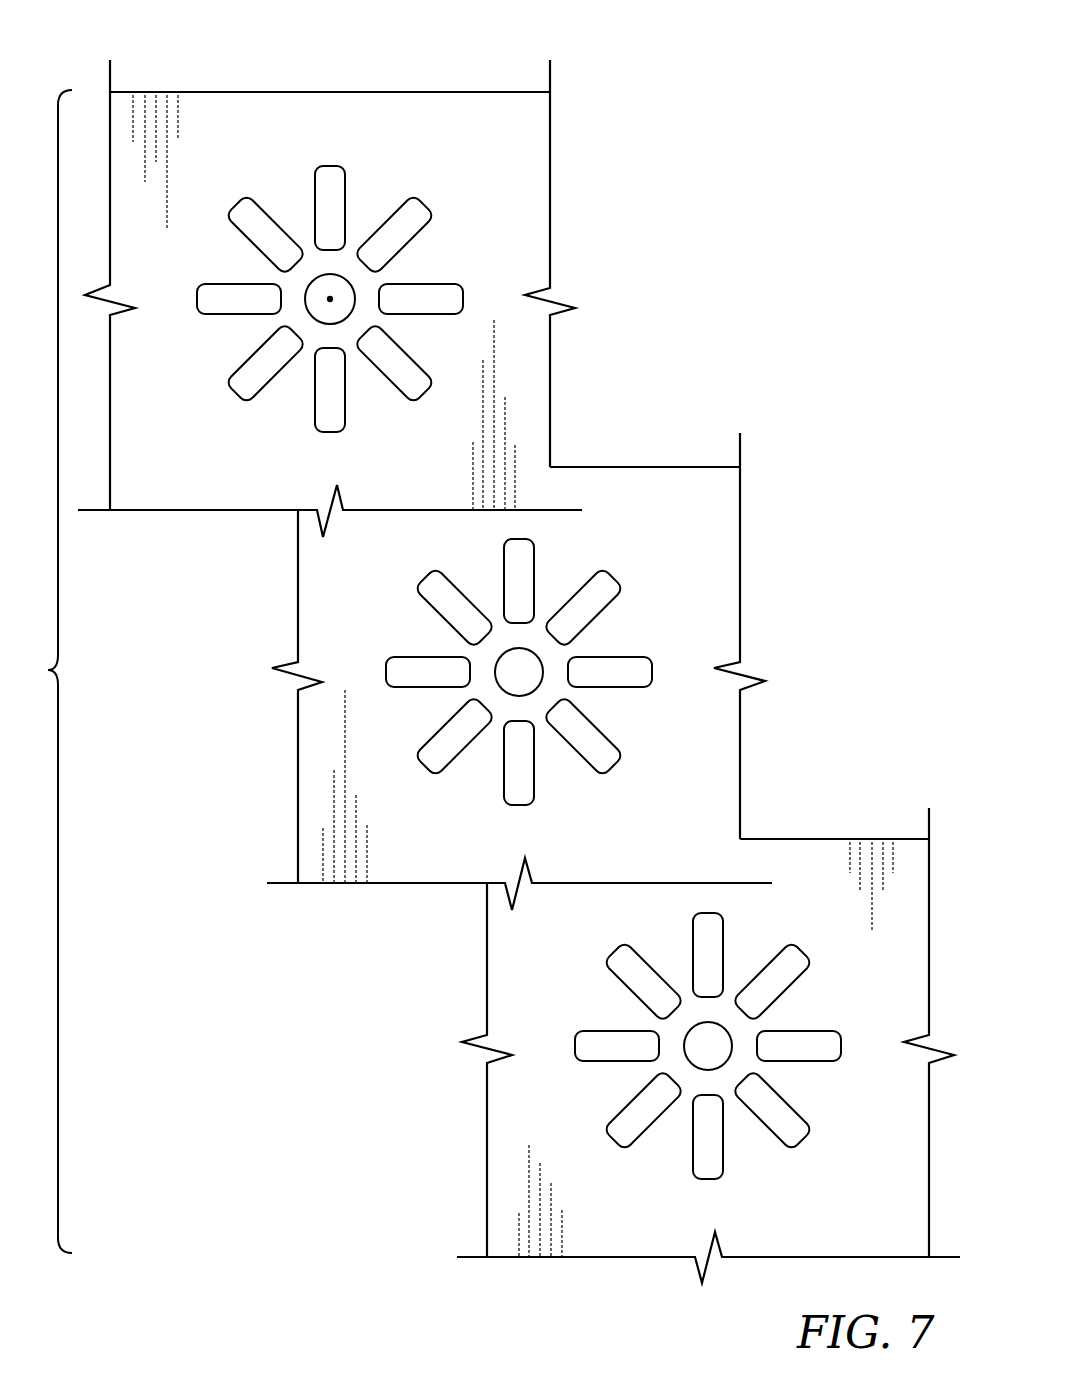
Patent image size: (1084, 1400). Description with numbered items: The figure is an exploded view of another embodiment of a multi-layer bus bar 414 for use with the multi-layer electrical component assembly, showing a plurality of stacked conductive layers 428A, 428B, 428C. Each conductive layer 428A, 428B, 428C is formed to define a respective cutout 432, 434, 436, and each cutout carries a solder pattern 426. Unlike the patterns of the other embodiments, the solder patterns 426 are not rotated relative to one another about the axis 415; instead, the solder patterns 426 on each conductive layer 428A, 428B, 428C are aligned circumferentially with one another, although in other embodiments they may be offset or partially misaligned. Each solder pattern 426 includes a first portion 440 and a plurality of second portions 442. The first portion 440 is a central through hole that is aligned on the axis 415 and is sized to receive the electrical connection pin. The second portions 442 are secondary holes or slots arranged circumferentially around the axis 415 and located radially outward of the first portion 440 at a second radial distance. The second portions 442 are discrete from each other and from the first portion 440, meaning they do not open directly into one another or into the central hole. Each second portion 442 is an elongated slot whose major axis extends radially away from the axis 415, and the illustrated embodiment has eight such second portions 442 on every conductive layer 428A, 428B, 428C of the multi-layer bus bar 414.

The multi-layer bus bar 414 is at (795, 90).
The conductive layer 428A is at (235, 140).
The conductive layer 428B is at (342, 582).
The conductive layer 428C is at (530, 958).
The solder pattern 426 is at (488, 686).
The cutout 432 is at (260, 405).
The cutout 434 is at (407, 764).
The cutout 436 is at (595, 1133).
The first portion 440 is at (340, 305).
The second portions 442 is at (430, 268).
The axis 415 is at (330, 299).